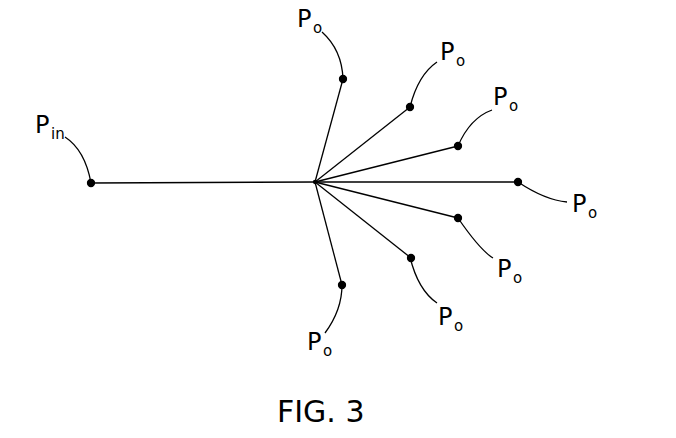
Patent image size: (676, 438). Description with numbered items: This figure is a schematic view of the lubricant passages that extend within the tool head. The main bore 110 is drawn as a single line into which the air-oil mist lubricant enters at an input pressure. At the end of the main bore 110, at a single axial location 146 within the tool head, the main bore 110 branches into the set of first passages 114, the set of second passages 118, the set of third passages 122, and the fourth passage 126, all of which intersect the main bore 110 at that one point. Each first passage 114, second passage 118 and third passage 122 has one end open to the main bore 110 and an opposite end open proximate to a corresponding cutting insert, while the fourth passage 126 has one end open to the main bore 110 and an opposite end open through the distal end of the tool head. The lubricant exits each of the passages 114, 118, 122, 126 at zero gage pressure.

The main bore 110 is at (200, 182).
The first passages 114 is at (328, 125).
The second passages 118 is at (388, 122).
The third passages 122 is at (430, 152).
The fourth passage 126 is at (507, 180).
The single axial location 146 is at (315, 182).